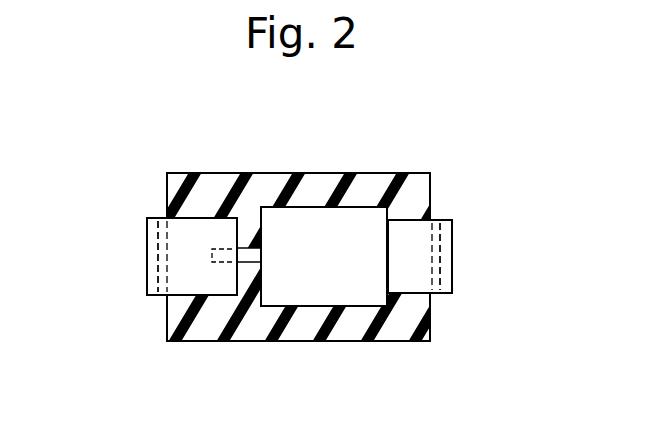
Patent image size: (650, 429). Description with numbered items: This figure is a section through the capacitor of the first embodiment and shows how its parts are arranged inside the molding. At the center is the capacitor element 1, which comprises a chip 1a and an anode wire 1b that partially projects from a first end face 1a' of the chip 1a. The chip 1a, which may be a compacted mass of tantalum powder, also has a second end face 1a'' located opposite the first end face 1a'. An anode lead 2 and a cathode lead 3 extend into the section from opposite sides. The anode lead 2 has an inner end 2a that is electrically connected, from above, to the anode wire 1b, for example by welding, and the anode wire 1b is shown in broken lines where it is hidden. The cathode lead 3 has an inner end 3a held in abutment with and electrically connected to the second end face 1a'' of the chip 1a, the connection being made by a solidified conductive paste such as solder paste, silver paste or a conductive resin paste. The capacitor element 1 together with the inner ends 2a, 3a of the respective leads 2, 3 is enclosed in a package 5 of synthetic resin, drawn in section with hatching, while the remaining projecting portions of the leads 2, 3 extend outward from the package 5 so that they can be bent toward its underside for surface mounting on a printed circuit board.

The capacitor element 1 is at (313, 196).
The chip 1a is at (324, 173).
The first end face 1a' is at (250, 193).
The second end face 1a'' is at (425, 197).
The anode wire 1b is at (223, 262).
The anode lead 2 is at (145, 262).
The inner end 2a is at (180, 240).
The cathode lead 3 is at (453, 268).
The inner end 3a is at (397, 257).
The package 5 is at (210, 172).